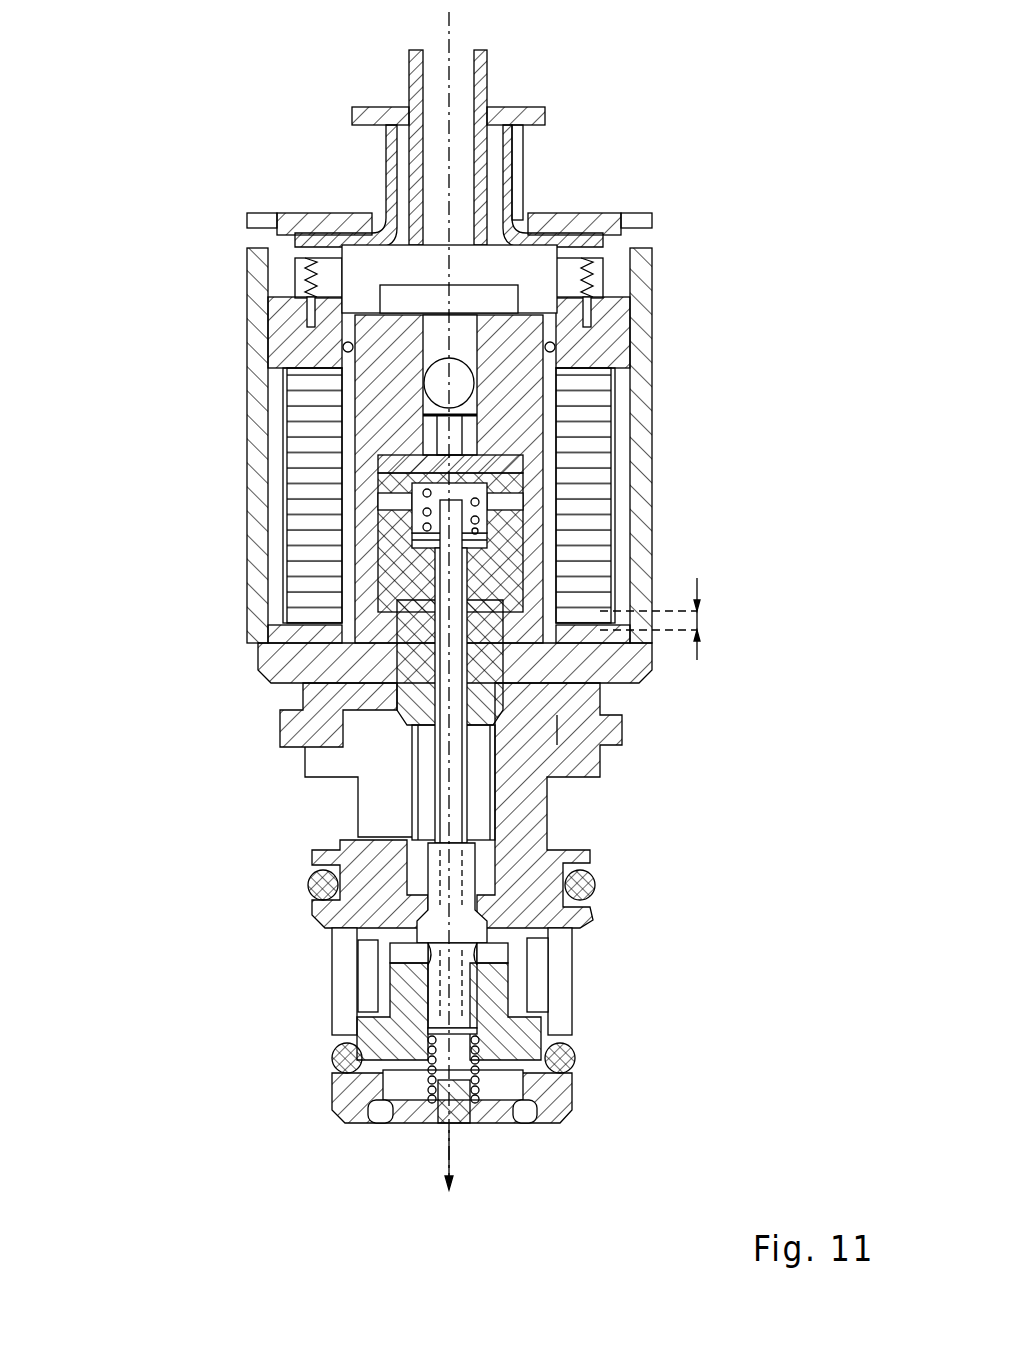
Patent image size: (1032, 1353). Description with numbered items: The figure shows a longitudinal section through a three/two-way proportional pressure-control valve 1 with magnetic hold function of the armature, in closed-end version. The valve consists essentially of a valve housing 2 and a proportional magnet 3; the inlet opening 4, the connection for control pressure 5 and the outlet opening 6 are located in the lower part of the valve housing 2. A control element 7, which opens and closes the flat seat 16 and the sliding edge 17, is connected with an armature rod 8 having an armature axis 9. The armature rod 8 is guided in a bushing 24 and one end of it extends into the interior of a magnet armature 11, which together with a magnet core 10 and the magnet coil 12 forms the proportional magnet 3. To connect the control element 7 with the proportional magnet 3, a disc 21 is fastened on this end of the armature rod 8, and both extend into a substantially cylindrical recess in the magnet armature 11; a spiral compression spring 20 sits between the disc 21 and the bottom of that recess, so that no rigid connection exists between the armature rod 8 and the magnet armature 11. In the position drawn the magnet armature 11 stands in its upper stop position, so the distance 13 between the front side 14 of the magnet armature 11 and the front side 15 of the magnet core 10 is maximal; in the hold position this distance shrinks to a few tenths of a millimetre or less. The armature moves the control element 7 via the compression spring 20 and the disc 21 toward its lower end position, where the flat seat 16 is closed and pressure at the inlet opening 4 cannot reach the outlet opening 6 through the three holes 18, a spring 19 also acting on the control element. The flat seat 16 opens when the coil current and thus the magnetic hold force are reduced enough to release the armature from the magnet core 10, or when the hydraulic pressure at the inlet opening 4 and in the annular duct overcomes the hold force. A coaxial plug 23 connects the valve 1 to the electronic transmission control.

The proportional pressure-control valve 1 is at (455, 623).
The valve housing 2 is at (566, 814).
The proportional magnet 3 is at (662, 544).
The inlet opening 4 is at (292, 986).
The connection for control pressure 5 is at (458, 1182).
The outlet opening 6 is at (295, 813).
The control element 7 is at (430, 962).
The armature rod 8 is at (454, 811).
The armature axis 9 is at (449, 37).
The magnet core 10 is at (305, 652).
The magnet armature 11 is at (482, 500).
The magnet coil 12 is at (290, 393).
The distance 13 is at (697, 620).
The front side of magnet armature 14 is at (603, 645).
The front side of magnet core 15 is at (350, 597).
The flat seat 16 is at (517, 962).
The sliding edge 17 is at (621, 993).
The hole 18 is at (492, 980).
The spring 19 is at (481, 1081).
The compression spring 20 is at (517, 495).
The disc 21 is at (480, 535).
The coaxial plug 23 is at (392, 88).
The bushing 24 is at (400, 686).